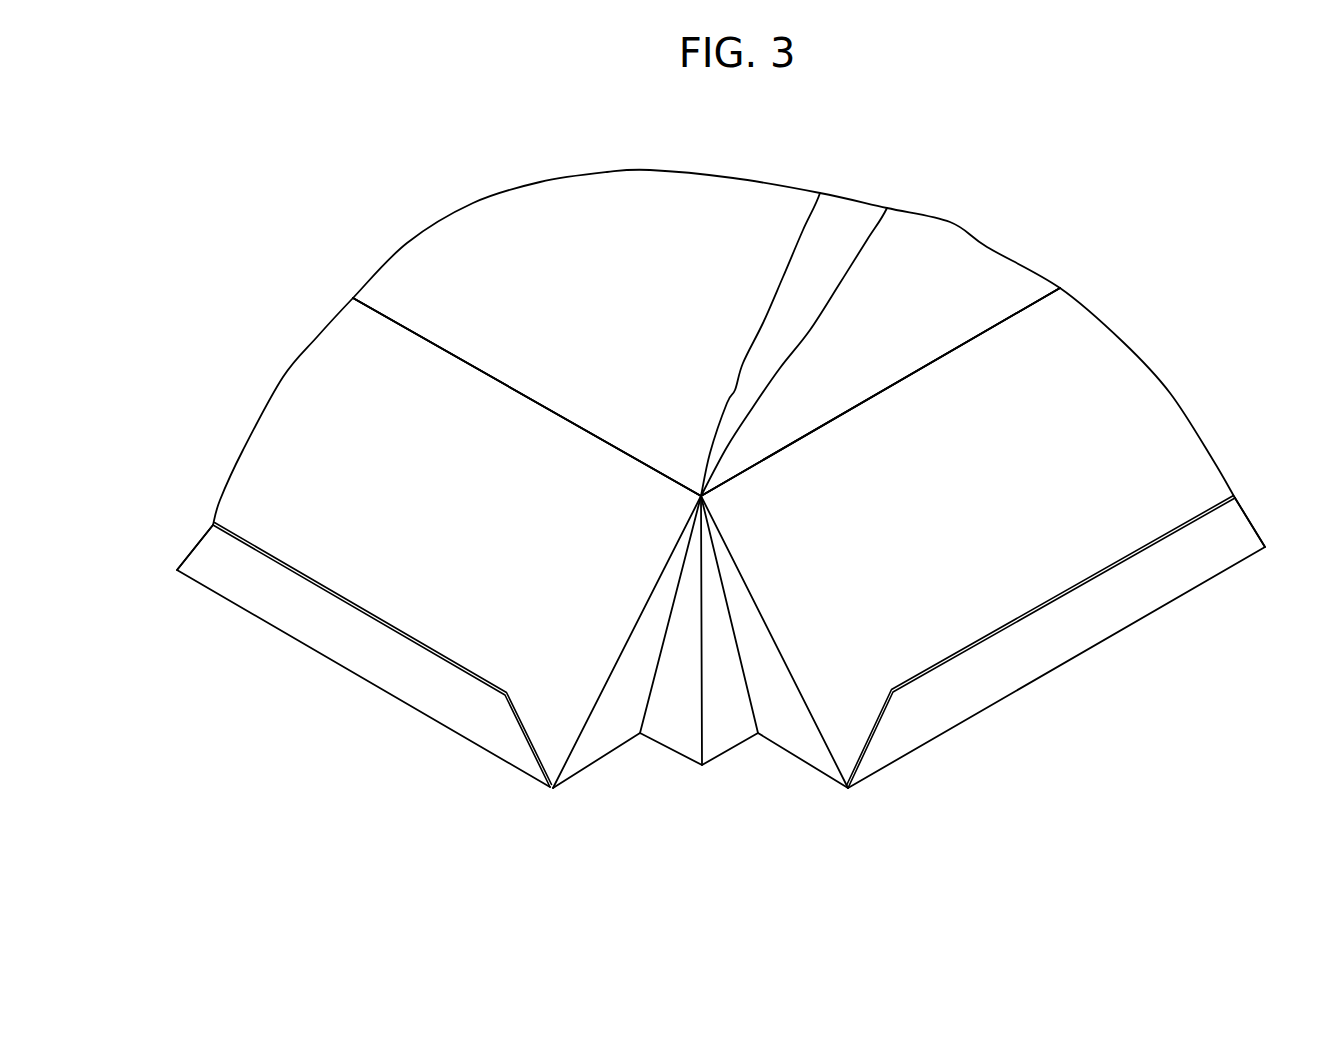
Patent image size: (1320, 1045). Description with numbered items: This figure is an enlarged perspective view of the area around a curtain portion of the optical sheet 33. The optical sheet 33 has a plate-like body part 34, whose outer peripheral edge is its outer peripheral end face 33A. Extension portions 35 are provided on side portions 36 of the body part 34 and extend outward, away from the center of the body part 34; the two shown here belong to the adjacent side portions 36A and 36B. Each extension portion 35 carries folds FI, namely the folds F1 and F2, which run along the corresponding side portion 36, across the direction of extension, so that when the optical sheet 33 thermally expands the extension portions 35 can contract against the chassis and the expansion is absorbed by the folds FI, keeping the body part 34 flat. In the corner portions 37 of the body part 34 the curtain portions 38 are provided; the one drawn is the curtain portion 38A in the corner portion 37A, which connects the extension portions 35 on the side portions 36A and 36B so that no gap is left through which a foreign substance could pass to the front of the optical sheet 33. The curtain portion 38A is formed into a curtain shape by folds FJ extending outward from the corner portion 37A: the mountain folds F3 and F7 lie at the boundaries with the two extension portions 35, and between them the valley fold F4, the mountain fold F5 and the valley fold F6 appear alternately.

The optical sheet 33 is at (597, 133).
The outer peripheral end face 33A is at (1067, 597).
The body part 34 is at (680, 197).
The extension portion 35 is at (315, 418).
The side portion 36 is at (1035, 297).
The side portion 36A is at (1012, 315).
The side portion 36B is at (392, 317).
The corner portion 37 is at (887, 208).
The corner portion 37A is at (820, 193).
The curtain portion 38 is at (662, 592).
The curtain portion 38A is at (648, 628).
The fold F1 is at (987, 333).
The fold F2 is at (1240, 568).
The fold F3 is at (583, 728).
The fold F4 is at (647, 700).
The fold F5 is at (700, 717).
The fold F6 is at (750, 708).
The fold F7 is at (818, 735).
The folds FI is at (1277, 219).
The folds FJ is at (810, 894).